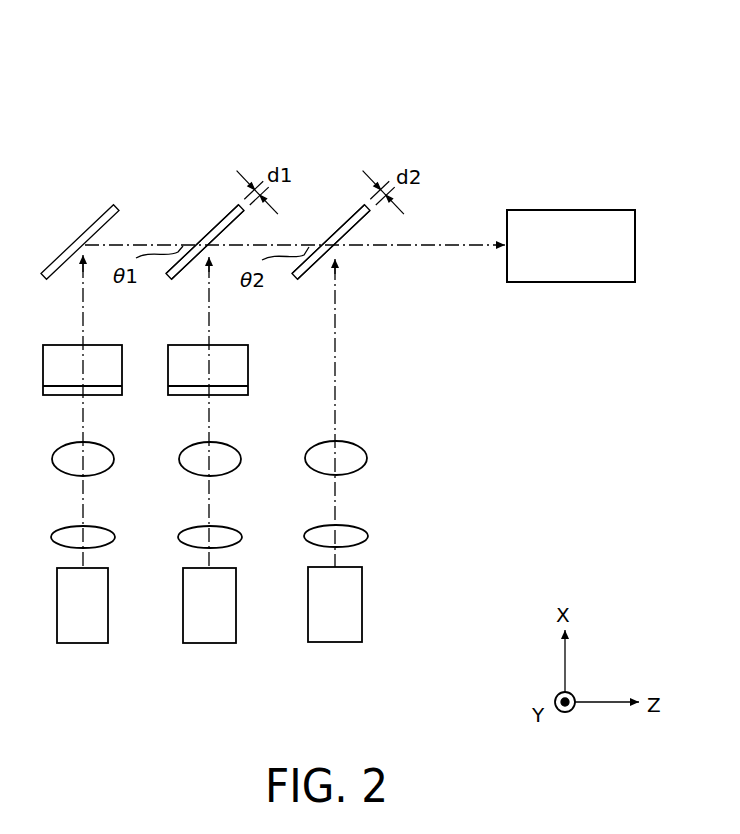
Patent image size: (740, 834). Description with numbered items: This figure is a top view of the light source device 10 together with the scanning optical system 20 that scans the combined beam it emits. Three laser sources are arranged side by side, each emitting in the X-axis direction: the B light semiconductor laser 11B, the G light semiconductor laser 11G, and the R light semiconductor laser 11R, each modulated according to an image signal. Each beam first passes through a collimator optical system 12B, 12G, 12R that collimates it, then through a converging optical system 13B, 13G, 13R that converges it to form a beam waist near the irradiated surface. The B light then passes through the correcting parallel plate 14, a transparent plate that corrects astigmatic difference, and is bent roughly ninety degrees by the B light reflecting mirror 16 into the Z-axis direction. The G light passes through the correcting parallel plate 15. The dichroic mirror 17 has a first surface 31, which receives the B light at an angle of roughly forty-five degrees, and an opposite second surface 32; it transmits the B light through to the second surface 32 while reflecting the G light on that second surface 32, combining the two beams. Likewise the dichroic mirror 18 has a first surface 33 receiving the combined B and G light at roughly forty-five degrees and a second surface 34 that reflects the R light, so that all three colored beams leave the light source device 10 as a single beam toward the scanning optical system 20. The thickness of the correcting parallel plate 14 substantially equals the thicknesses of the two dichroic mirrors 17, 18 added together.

The light source device 10 is at (116, 99).
The B light reflecting mirror 16 is at (90, 230).
The dichroic mirror 17 is at (229, 202).
The dichroic mirror 18 is at (355, 202).
The first surface 31 is at (214, 233).
The second surface 32 is at (228, 233).
The first surface 33 is at (341, 233).
The second surface 34 is at (358, 233).
The scanning optical system 20 is at (572, 217).
The correcting parallel plate 14 is at (105, 350).
The correcting parallel plate 15 is at (231, 350).
The converging optical system 13B is at (103, 456).
The converging optical system 13G is at (257, 436).
The converging optical system 13R is at (356, 455).
The collimator optical system 12B is at (103, 532).
The collimator optical system 12G is at (230, 532).
The collimator optical system 12R is at (383, 513).
The B light semiconductor laser 11B is at (83, 636).
The G light semiconductor laser 11G is at (210, 636).
The R light semiconductor laser 11R is at (335, 635).